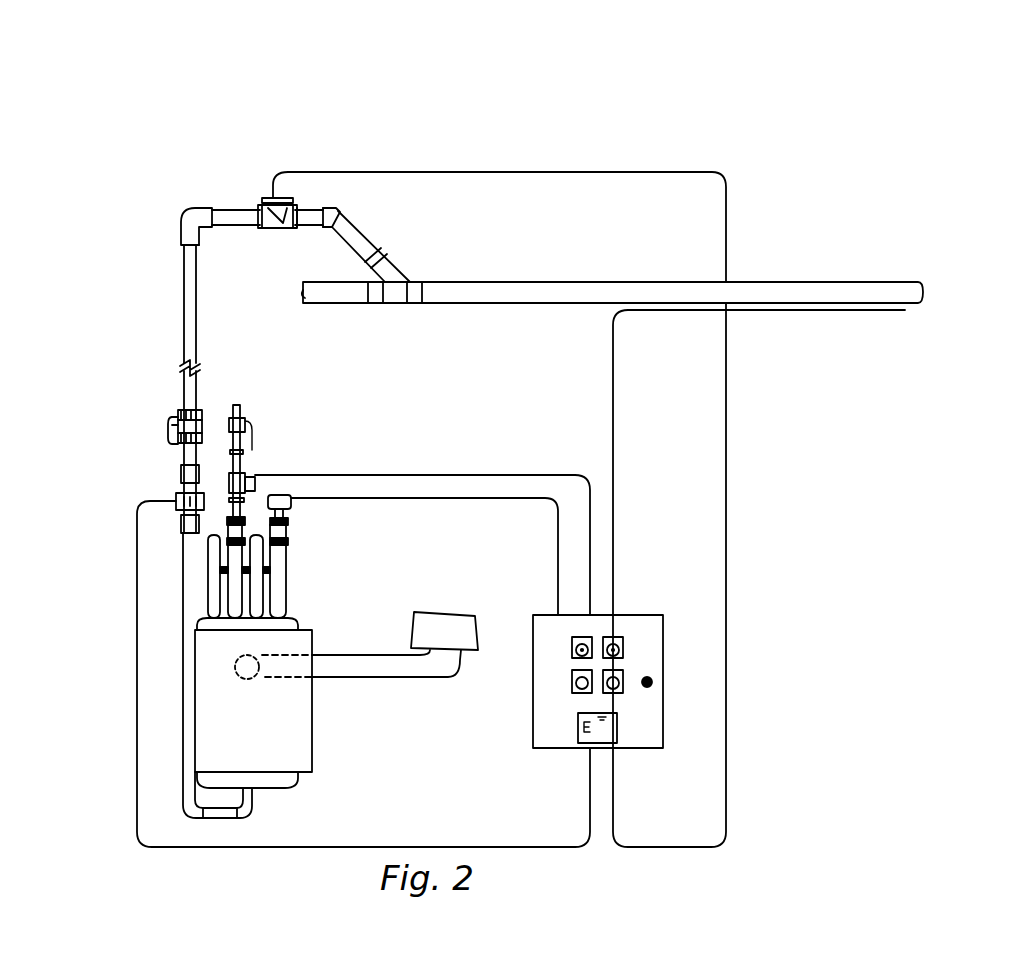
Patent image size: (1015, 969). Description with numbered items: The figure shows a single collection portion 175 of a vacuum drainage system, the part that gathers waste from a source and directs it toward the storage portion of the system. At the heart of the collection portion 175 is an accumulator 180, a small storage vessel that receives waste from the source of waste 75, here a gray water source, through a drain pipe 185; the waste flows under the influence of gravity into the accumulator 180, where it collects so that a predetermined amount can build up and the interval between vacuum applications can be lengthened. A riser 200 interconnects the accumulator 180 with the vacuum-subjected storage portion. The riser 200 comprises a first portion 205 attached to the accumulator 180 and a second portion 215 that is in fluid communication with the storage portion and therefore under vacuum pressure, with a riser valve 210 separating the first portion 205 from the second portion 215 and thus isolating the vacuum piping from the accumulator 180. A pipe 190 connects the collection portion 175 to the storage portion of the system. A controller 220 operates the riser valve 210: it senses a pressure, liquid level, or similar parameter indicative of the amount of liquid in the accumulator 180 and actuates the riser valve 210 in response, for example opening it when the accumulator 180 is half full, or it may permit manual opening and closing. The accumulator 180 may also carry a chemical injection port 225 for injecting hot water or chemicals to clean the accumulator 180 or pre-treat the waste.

The collection portion 175 is at (766, 120).
The pipe 190 is at (890, 290).
The second portion 215 is at (185, 267).
The riser 200 is at (188, 391).
The riser valve 210 is at (185, 494).
The chemical injection port 225 is at (236, 404).
The accumulator 180 is at (278, 735).
The drain pipe 185 is at (258, 655).
The source of waste 75 is at (447, 613).
The controller 220 is at (627, 623).
The first portion 205 is at (190, 711).